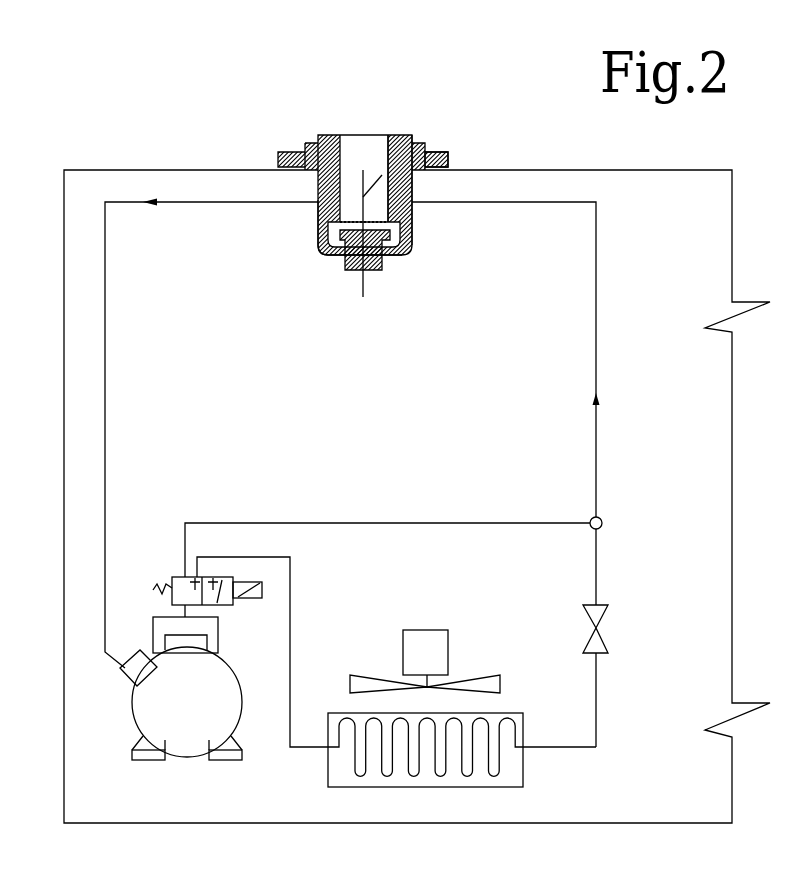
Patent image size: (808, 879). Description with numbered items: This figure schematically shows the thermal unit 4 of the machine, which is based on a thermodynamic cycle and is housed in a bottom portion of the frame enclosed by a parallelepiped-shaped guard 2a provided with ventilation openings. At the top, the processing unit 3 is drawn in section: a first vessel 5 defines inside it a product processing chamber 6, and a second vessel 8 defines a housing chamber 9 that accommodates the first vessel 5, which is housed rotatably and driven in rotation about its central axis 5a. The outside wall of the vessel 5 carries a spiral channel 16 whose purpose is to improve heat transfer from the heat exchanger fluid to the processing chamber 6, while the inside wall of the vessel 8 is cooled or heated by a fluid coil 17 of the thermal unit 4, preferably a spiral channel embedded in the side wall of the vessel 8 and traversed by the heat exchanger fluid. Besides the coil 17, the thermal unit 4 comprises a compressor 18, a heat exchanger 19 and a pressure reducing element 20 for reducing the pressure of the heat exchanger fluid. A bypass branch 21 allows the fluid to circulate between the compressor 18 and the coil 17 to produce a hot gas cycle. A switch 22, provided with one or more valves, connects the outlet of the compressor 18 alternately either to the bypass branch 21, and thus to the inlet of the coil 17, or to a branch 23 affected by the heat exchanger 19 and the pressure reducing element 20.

The guard 2a is at (697, 803).
The processing unit 3 is at (297, 230).
The thermal unit 4 is at (498, 500).
The first vessel 5 is at (347, 232).
The central axis 5a is at (435, 140).
The product processing chamber 6 is at (373, 148).
The second vessel 8 is at (327, 265).
The housing chamber 9 is at (387, 250).
The spiral channel 16 is at (410, 195).
The fluid coil 17 is at (317, 250).
The compressor 18 is at (172, 714).
The heat exchanger 19 is at (472, 642).
The pressure reducing element 20 is at (612, 625).
The bypass branch 21 is at (268, 522).
The switch 22 is at (157, 572).
The branch 23 is at (600, 728).